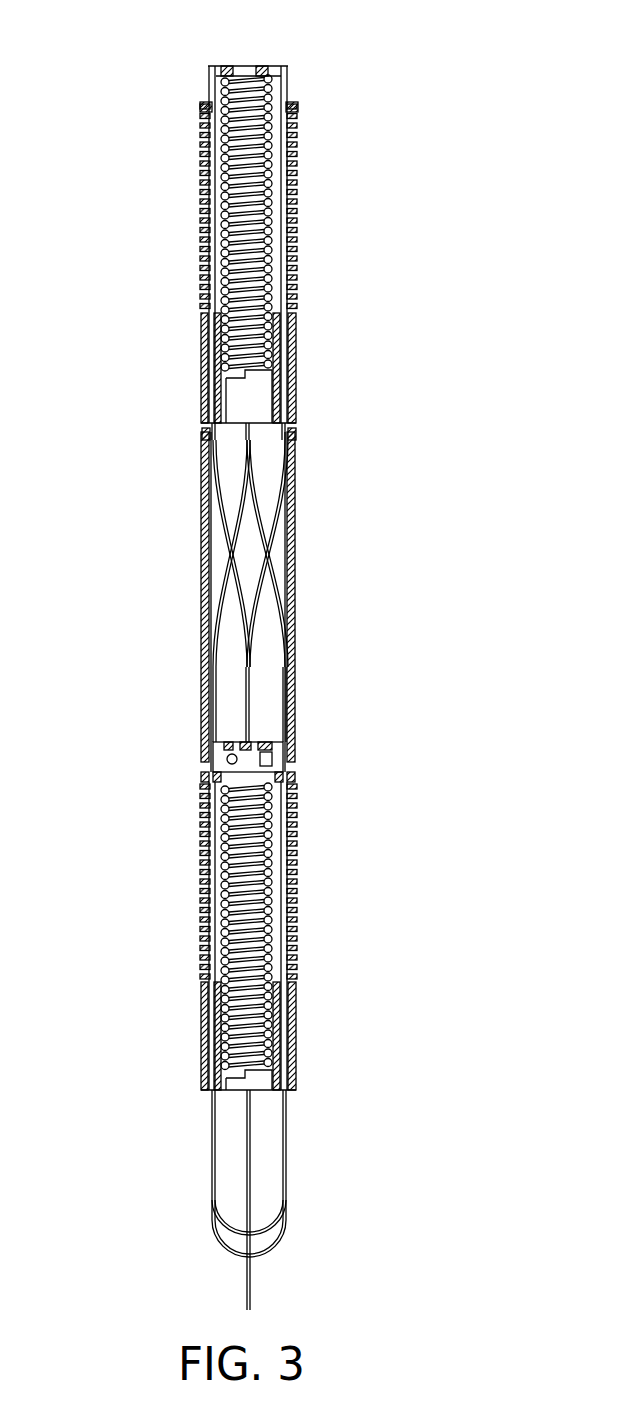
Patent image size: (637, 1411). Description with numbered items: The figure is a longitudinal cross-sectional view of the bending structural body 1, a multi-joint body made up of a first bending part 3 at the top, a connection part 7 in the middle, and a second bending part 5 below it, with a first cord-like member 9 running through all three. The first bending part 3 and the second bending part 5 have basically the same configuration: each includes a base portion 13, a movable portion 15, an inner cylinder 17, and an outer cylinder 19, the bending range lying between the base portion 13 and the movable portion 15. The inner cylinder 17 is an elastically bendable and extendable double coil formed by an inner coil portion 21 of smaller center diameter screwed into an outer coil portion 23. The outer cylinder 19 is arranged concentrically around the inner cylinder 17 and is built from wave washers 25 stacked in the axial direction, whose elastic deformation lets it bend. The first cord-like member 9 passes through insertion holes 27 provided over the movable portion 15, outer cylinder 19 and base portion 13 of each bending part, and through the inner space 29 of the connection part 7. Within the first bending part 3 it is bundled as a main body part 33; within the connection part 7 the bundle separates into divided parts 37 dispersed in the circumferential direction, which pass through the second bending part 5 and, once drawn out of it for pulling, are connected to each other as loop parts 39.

The bending structural body 1 is at (399, 144).
The first bending part 3 is at (305, 233).
The second bending part 5 is at (315, 906).
The connection part 7 is at (308, 654).
The first cord-like member 9 is at (208, 78).
The base portion 13 is at (207, 333).
The movable portion 15 is at (220, 66).
The inner cylinder 17 is at (213, 118).
The outer cylinder 19 is at (207, 230).
The inner coil portion 21 is at (292, 260).
The outer coil portion 23 is at (292, 290).
The wave washer 25 is at (207, 163).
The insertion hole 27 is at (207, 383).
The inner space 29 is at (273, 567).
The main body part 33 is at (207, 412).
The divided part 37 is at (217, 487).
The loop part 39 is at (290, 1213).